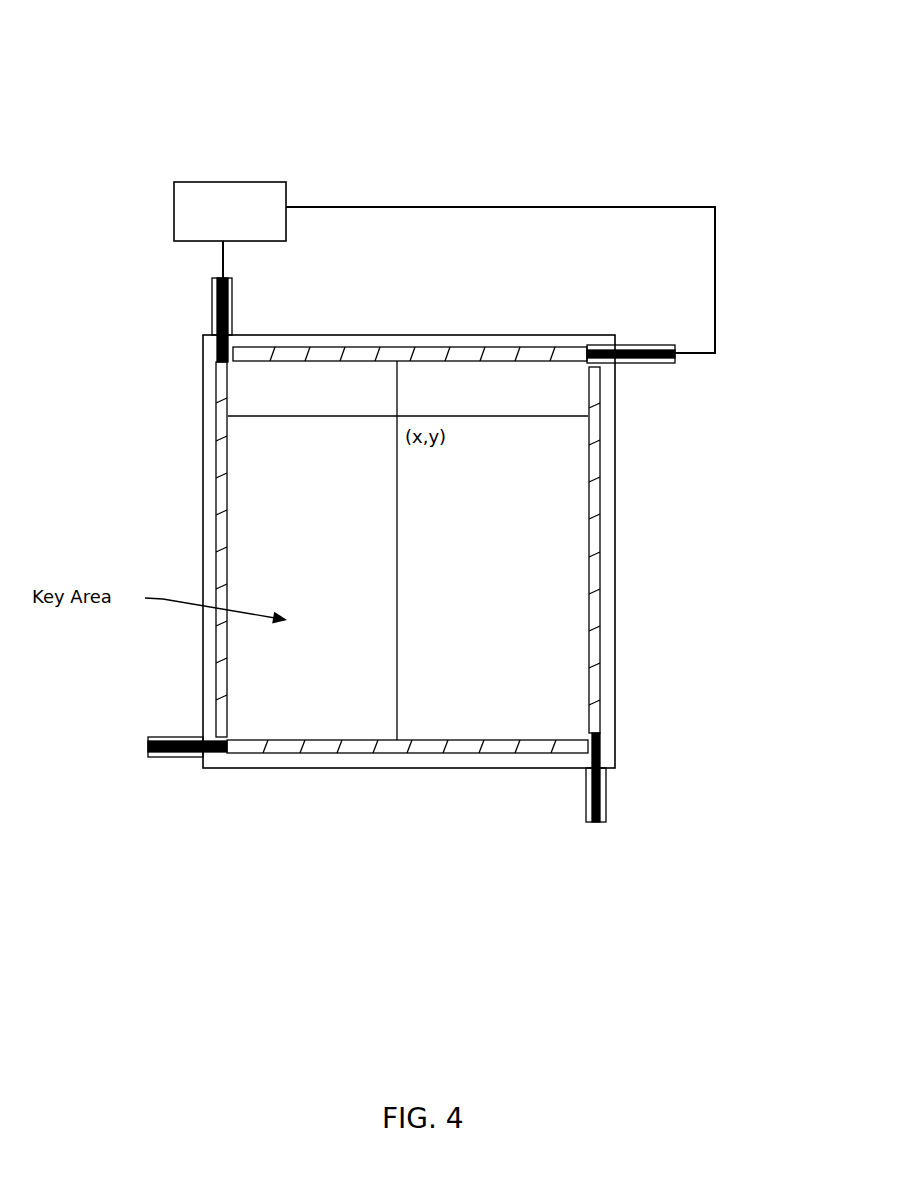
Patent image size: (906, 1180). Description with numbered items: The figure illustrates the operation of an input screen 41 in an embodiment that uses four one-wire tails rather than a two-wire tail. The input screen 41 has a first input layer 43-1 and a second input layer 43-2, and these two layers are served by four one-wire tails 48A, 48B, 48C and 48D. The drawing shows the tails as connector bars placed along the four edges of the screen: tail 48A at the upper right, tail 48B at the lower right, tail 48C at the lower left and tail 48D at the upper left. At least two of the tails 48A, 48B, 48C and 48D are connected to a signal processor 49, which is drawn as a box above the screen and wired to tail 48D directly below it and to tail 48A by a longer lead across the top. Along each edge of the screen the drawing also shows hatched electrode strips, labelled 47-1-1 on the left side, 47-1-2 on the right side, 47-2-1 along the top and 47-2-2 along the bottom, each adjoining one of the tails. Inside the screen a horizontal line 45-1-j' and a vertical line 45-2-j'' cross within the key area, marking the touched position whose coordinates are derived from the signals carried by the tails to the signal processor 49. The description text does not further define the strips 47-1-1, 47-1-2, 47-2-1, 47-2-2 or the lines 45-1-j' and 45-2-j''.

The input screen 41 is at (385, 418).
The signal processor 49 is at (174, 211).
The one-wire tail 48A is at (615, 319).
The one-wire tail 48B is at (677, 802).
The one-wire tail 48C is at (126, 782).
The one-wire tail 48D is at (148, 320).
The left electrode strip 47-1-1 is at (138, 549).
The right electrode strip 47-1-2 is at (671, 550).
The top electrode strip 47-2-1 is at (410, 294).
The bottom electrode strip 47-2-2 is at (394, 785).
The row conductor line j' 45-1-j' is at (408, 444).
The column conductor line j'' 45-2-j'' is at (464, 550).
The first input layer 43-1 is at (485, 551).
The second input layer 43-2 is at (433, 551).